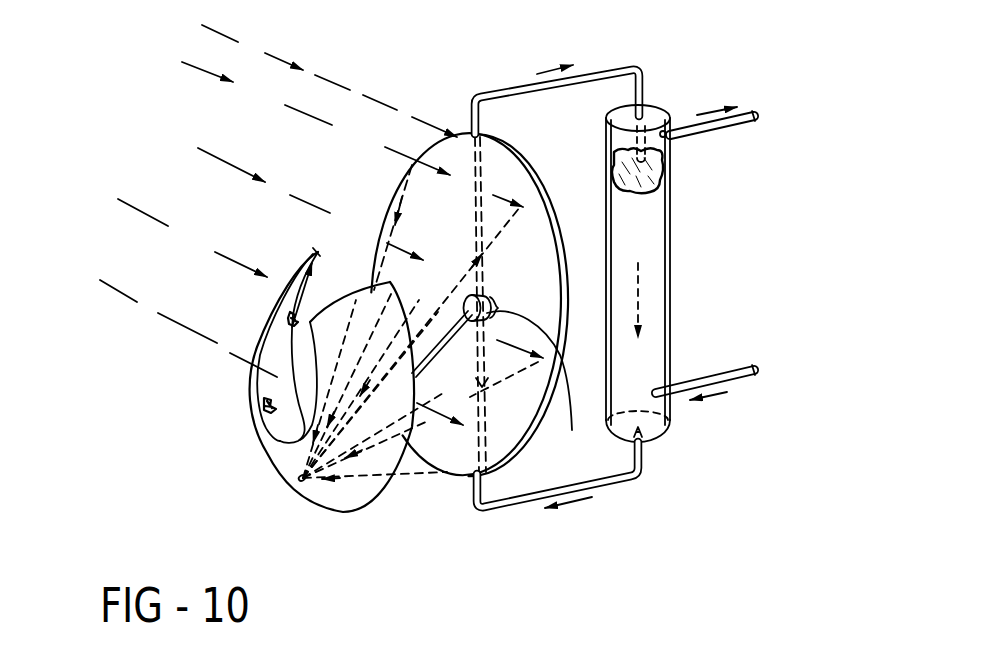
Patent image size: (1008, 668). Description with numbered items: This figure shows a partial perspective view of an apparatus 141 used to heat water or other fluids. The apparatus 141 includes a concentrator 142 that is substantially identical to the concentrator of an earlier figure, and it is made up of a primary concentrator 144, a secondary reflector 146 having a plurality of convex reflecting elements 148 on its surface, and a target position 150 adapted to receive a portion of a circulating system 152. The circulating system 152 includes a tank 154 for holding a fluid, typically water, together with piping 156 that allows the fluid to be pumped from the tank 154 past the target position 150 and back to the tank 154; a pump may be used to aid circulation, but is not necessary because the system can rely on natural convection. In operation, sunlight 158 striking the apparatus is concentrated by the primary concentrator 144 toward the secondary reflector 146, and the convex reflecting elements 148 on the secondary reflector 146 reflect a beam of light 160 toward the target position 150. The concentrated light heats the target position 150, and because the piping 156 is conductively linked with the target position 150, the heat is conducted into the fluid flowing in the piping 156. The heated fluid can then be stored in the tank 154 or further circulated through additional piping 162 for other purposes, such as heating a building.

The apparatus 141 is at (470, 284).
The concentrator 142 is at (432, 342).
The primary concentrator 144 is at (528, 283).
The secondary reflector 146 is at (316, 389).
The convex reflecting elements 148 is at (224, 339).
The target position 150 is at (545, 387).
The circulating system 152 is at (619, 74).
The tank 154 is at (700, 273).
The piping 156 is at (620, 475).
The sunlight 158 is at (278, 201).
The beam of light 160 is at (455, 350).
The piping 162 is at (748, 226).